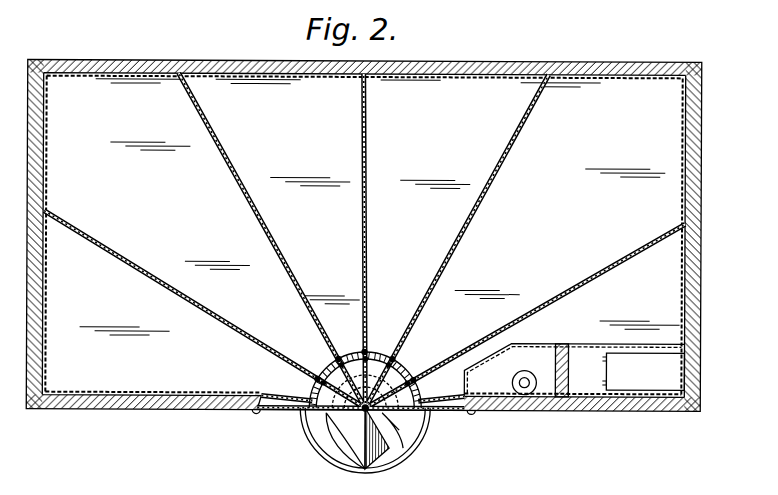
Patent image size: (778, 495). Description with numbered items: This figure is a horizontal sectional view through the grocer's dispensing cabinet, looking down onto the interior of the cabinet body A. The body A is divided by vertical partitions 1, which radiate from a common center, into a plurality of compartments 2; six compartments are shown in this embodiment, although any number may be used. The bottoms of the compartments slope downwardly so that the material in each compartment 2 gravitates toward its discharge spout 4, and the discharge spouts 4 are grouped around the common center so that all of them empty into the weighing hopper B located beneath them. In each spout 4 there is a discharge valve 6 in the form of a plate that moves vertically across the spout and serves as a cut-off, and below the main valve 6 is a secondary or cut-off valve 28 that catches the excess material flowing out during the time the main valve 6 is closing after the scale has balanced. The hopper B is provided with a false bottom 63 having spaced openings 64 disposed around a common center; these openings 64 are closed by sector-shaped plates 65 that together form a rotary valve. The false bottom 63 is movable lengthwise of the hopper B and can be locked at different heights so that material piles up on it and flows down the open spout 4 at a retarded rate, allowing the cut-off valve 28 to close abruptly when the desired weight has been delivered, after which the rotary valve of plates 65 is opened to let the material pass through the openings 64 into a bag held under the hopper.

The body of a cabinet A is at (375, 238).
The weighing hopper B is at (426, 448).
The vertical partitions 1 is at (208, 313).
The compartments 2 is at (235, 235).
The discharge spouts 4 is at (405, 380).
The discharge valve 6 is at (376, 356).
The secondary or cut-off valve 28 is at (402, 405).
The false bottom 63 is at (331, 453).
The spaced openings 64 is at (328, 432).
The sector-shaped plates 65 is at (388, 433).